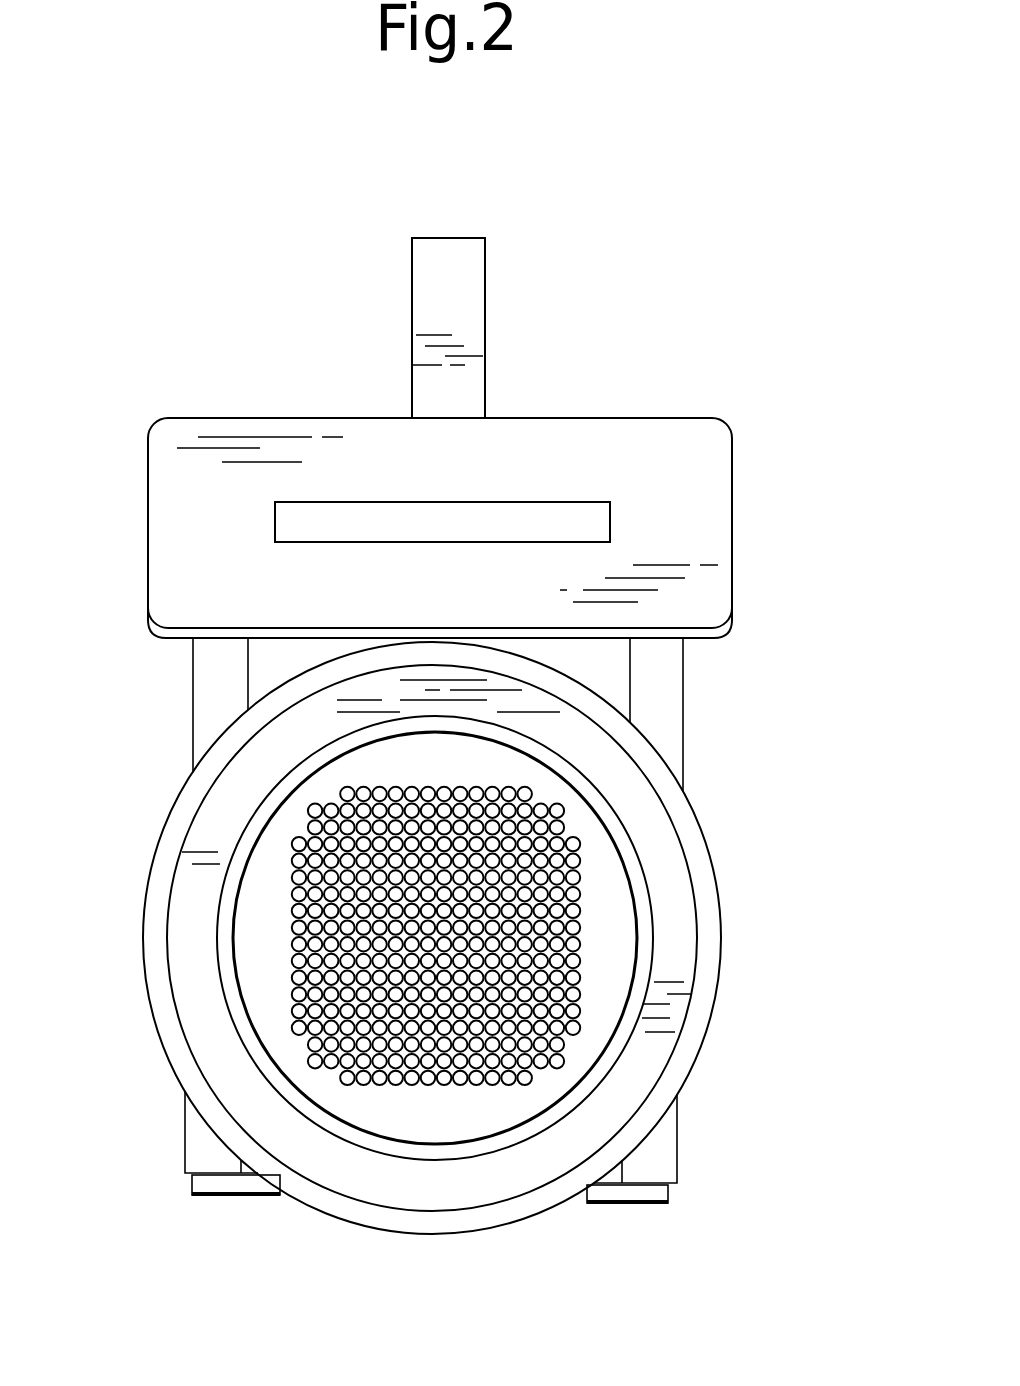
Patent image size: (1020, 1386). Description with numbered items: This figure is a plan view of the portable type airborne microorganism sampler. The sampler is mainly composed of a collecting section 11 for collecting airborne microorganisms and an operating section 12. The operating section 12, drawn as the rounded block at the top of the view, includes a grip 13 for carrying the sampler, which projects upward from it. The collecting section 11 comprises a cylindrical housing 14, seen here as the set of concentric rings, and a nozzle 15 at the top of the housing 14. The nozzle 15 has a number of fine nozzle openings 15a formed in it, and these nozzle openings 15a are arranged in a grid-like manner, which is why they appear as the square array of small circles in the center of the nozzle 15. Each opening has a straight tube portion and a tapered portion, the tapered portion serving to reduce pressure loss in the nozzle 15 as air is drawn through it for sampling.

The collecting section 11 is at (714, 1059).
The operating section 12 is at (700, 490).
The grip 13 is at (467, 326).
The cylindrical housing 14 is at (685, 893).
The nozzle 15 is at (487, 1128).
The nozzle openings 15a is at (377, 1085).